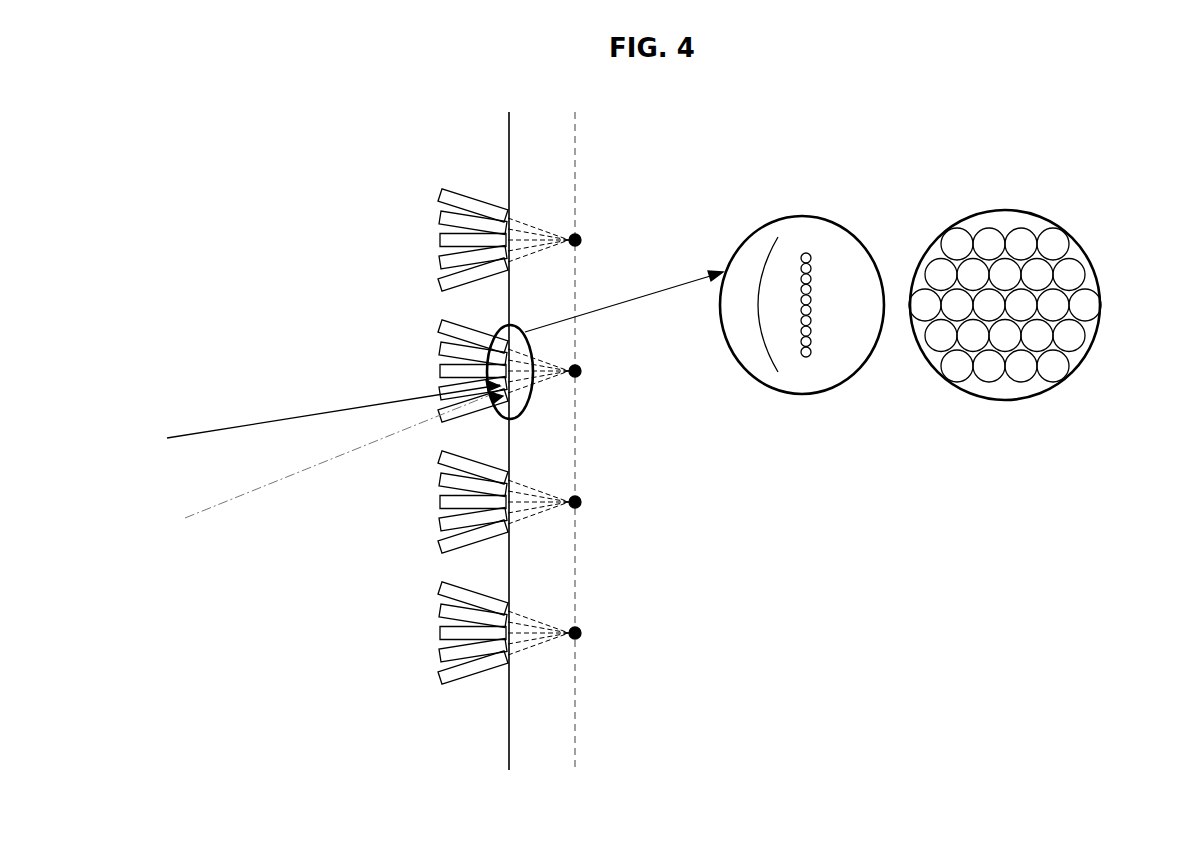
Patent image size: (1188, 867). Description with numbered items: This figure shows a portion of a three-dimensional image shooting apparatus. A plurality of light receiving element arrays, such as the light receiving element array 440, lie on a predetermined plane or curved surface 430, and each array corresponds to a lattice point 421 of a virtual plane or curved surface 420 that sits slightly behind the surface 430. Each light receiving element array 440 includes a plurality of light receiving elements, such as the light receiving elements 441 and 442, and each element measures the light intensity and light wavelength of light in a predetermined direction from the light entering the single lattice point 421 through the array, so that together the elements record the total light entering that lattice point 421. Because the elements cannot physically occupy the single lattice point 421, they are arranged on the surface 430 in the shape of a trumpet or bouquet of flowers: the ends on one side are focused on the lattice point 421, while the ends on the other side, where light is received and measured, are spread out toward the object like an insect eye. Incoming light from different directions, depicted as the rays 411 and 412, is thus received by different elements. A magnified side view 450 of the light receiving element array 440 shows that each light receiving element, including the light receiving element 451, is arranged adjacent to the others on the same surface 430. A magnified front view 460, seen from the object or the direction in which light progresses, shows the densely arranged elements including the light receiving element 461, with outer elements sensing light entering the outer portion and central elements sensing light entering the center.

The first incident light ray 411 is at (256, 420).
The second incident light ray 412 is at (271, 485).
The virtual plane or curved surface 420 is at (575, 148).
The lattice point 421 is at (580, 368).
The plane or curved surface 430 is at (509, 138).
The light receiving element array 440 is at (462, 306).
The light receiving element 441 is at (440, 390).
The light receiving element 442 is at (447, 432).
The magnified side view 450 is at (801, 215).
The light receiving element 451 is at (808, 333).
The magnified front view 460 is at (1001, 210).
The light receiving element 461 is at (1075, 271).